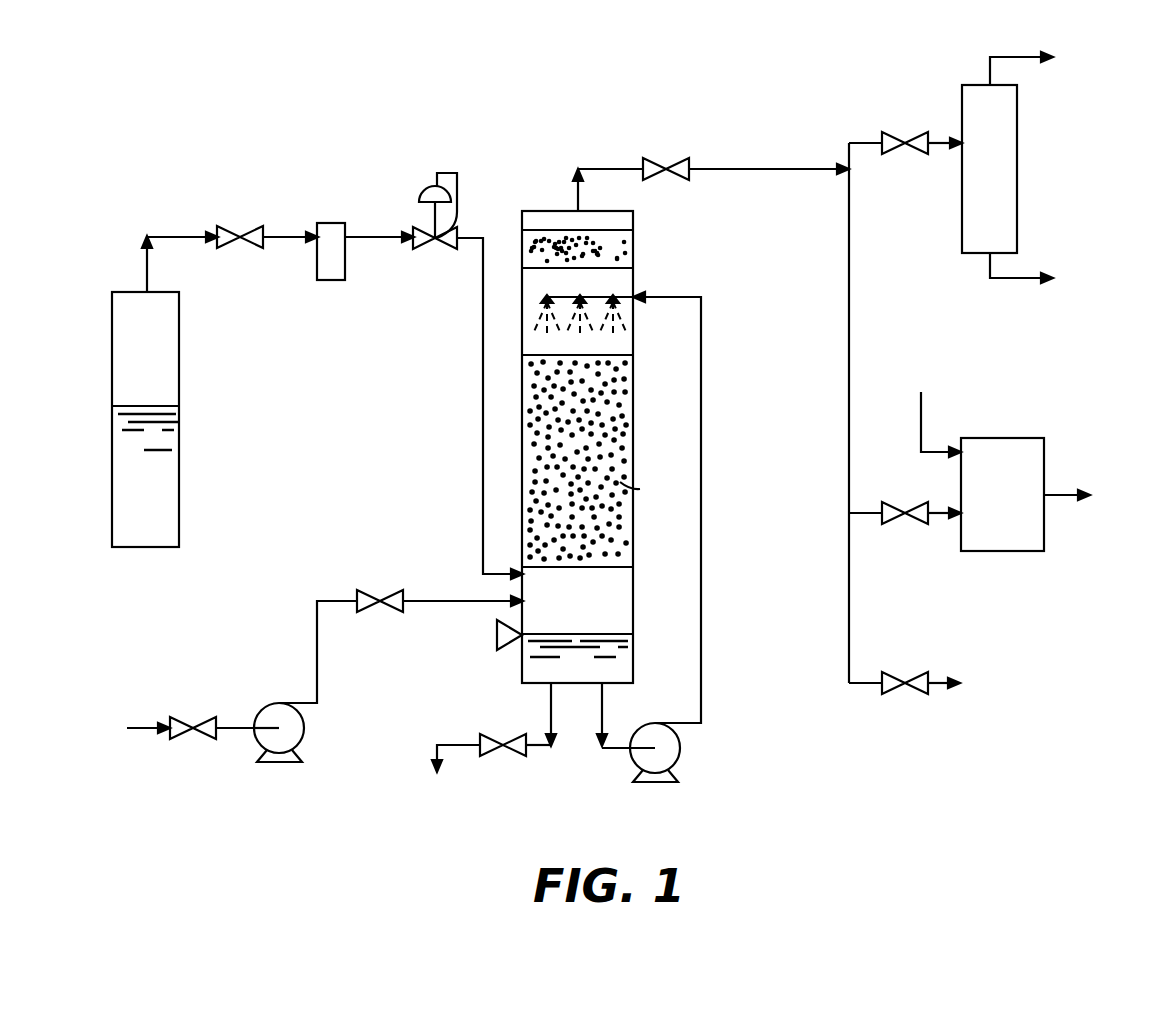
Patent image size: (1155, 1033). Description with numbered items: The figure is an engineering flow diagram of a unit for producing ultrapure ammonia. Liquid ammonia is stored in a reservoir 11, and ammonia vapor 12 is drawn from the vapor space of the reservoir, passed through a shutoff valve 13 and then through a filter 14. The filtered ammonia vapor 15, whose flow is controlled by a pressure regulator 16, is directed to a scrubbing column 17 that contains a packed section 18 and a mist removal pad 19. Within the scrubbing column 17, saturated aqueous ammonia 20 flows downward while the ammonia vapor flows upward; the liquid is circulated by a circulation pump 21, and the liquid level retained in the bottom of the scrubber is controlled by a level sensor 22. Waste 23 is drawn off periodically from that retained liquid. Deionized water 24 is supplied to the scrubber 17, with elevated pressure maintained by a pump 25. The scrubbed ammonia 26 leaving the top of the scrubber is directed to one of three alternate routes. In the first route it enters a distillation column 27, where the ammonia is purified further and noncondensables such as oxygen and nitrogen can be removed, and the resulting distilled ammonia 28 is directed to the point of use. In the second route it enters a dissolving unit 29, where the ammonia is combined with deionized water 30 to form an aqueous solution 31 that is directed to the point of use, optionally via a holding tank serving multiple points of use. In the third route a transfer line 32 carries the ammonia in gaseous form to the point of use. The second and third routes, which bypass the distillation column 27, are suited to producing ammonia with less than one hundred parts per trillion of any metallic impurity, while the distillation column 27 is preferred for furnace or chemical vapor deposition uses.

The reservoir 11 is at (112, 388).
The ammonia vapor 12 is at (176, 237).
The shutoff valve 13 is at (251, 227).
The filter 14 is at (322, 223).
The filtered ammonia vapor 15 is at (368, 237).
The pressure regulator 16 is at (420, 194).
The scrubbing column 17 is at (636, 408).
The packed section 18 is at (640, 489).
The mist removal pad 19 is at (627, 240).
The saturated aqueous ammonia 20 is at (703, 412).
The circulation pump 21 is at (680, 749).
The level sensor 22 is at (497, 639).
The waste 23 is at (490, 749).
The deionized water 24 is at (144, 728).
The pump 25 is at (262, 710).
The scrubbed ammonia 26 is at (600, 169).
The distillation column 27 is at (1018, 171).
The distilled ammonia 28 is at (1030, 278).
The dissolving unit 29 is at (1024, 438).
The deionized water 30 is at (921, 416).
The aqueous solution 31 is at (1072, 495).
The transfer line 32 is at (940, 683).